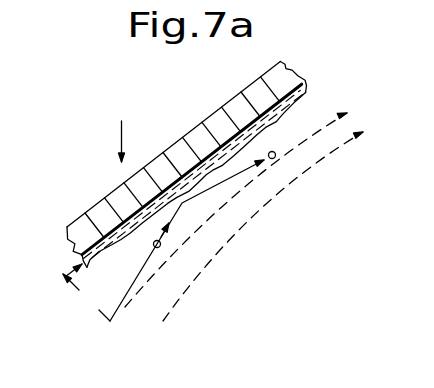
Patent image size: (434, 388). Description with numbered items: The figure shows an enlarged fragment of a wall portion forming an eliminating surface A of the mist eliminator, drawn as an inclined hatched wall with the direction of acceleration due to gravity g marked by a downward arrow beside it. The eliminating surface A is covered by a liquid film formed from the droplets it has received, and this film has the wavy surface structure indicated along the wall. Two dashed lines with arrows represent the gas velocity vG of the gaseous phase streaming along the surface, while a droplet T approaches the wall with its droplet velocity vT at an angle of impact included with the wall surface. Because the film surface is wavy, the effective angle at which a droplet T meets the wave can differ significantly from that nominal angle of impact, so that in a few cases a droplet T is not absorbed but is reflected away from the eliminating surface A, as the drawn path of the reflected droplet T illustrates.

The eliminating surface A is at (130, 215).
The acceleration due to gravity g is at (128, 141).
The droplets T is at (153, 246).
The velocity of the droplets vT is at (178, 232).
The gas velocity vG is at (247, 209).